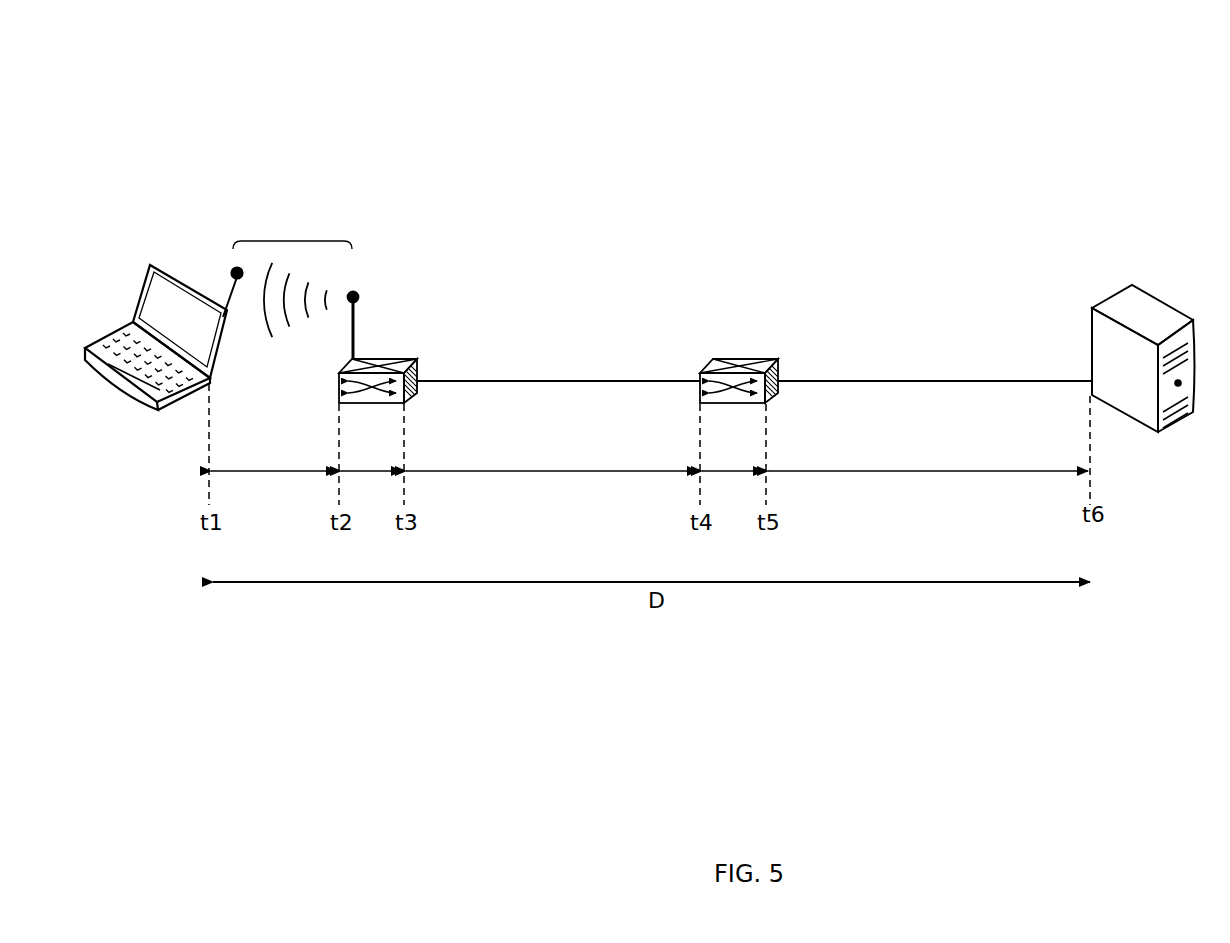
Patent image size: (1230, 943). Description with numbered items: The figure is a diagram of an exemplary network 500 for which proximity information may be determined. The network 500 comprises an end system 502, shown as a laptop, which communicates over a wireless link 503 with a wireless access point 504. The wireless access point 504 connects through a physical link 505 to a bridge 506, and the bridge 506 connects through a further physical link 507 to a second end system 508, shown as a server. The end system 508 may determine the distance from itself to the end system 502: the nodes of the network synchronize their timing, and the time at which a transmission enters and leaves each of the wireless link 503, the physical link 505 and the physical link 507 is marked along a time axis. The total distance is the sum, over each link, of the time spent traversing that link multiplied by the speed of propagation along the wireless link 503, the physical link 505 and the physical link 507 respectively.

The network 500 is at (422, 108).
The end system 502 is at (152, 263).
The wireless link 503 is at (292, 241).
The wireless access point 504 is at (383, 358).
The physical link 505 is at (495, 380).
The bridge 506 is at (738, 358).
The physical link 507 is at (852, 380).
The end system 508 is at (1139, 289).